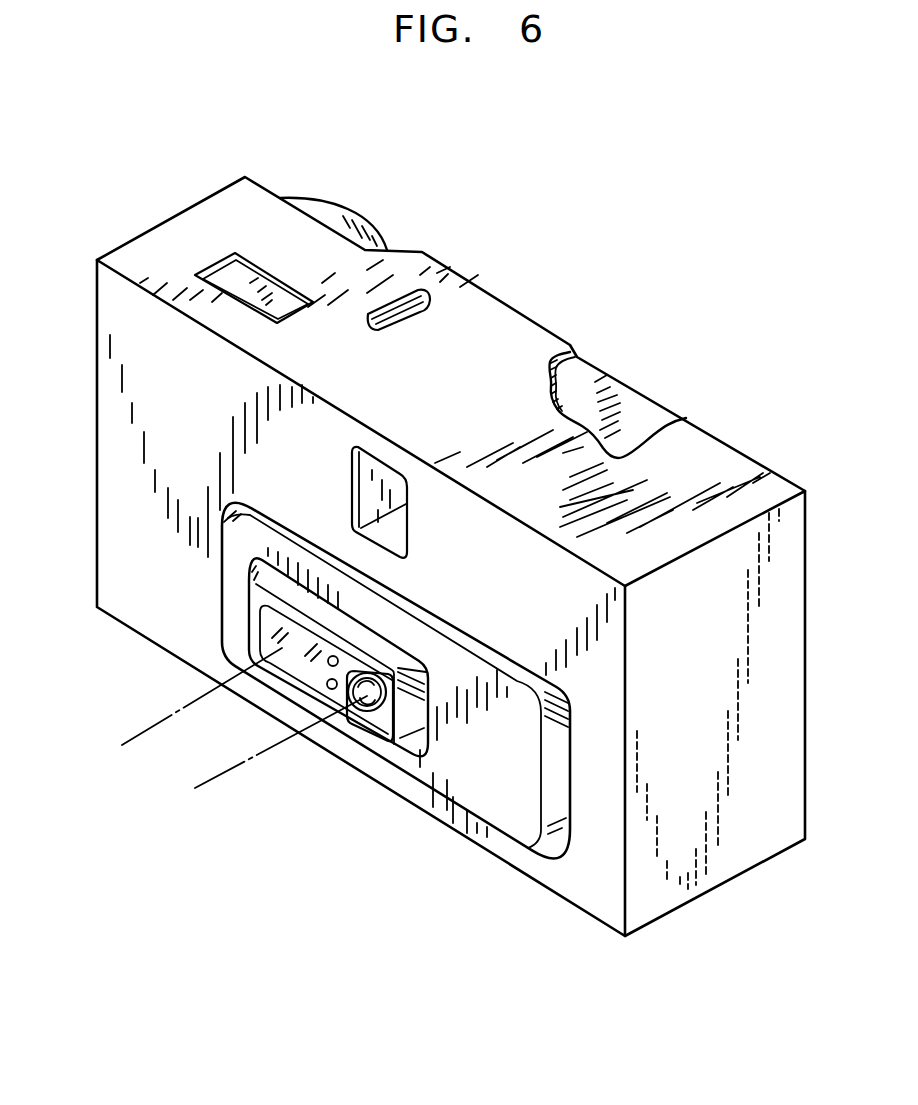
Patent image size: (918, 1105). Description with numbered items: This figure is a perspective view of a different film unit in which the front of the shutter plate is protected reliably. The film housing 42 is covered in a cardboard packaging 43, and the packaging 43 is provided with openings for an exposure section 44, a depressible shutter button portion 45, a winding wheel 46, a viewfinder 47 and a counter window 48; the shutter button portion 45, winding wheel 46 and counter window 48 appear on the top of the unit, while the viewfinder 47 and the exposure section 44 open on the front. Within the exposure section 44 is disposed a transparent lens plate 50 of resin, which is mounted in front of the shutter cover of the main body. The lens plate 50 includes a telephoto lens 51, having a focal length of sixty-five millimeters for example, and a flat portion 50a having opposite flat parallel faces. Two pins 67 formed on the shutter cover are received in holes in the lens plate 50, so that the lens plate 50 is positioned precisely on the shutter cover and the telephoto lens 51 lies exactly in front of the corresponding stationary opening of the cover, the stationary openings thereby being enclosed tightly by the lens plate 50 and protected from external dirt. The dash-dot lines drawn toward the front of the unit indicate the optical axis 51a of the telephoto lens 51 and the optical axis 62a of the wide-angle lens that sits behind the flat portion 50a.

The film housing 42 is at (623, 387).
The cardboard packaging 43 is at (525, 317).
The exposure section 44 is at (407, 780).
The depressible shutter button portion 45 is at (232, 275).
The winding wheel 46 is at (348, 212).
The viewfinder 47 is at (370, 483).
The counter window 48 is at (402, 295).
The lens plate 50 is at (356, 731).
The flat portion 50a is at (275, 634).
The telephoto lens 51 is at (365, 676).
The optical axis of telephoto lens 51a is at (213, 779).
The optical axis of wide-angle lens 62a is at (140, 731).
The pins 67 is at (327, 686).